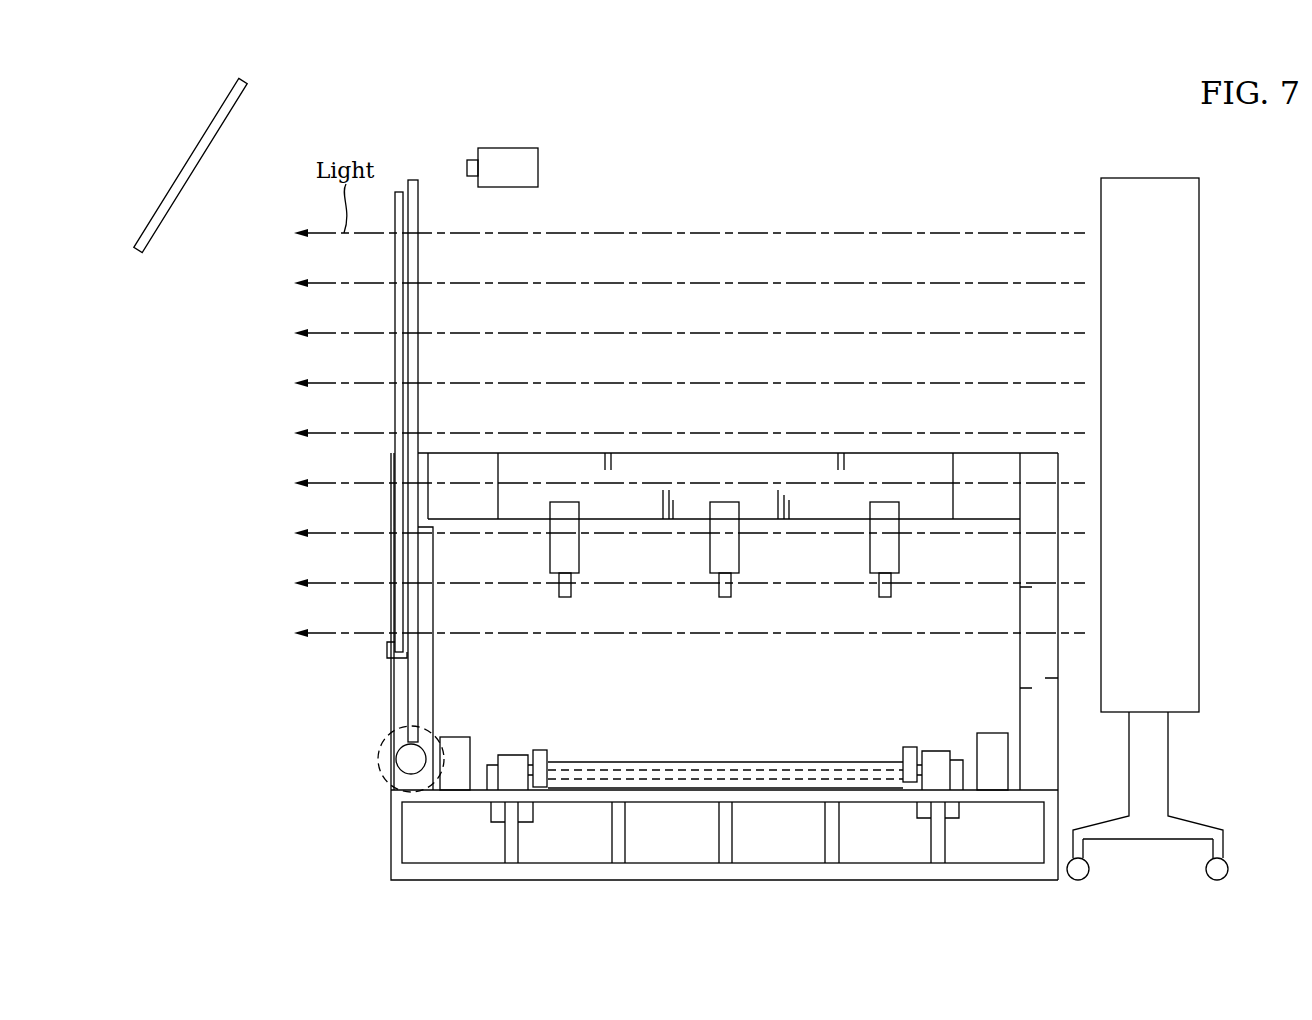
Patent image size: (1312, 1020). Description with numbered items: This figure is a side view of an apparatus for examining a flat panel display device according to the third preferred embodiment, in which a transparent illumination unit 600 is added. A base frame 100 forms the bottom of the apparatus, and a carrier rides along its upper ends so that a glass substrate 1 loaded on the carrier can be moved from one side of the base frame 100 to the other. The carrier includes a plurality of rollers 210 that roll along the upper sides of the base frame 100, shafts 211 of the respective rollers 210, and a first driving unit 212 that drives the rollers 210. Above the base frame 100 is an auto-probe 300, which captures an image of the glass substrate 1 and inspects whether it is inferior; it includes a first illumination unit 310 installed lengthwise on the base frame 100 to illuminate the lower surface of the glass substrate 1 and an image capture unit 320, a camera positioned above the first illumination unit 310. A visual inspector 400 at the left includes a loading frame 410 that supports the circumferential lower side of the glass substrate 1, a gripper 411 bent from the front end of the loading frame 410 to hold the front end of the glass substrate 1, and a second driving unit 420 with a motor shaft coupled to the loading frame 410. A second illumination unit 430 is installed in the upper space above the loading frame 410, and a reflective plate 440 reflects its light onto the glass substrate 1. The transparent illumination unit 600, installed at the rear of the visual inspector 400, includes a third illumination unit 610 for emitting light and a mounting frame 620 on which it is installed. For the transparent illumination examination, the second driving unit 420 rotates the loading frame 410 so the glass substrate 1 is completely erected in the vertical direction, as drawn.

The glass substrate 1 is at (399, 418).
The base frame 100 is at (382, 838).
The rollers 210 is at (540, 750).
The shafts 211 is at (524, 766).
The first driving unit 212 is at (492, 813).
The auto-probe 300 is at (669, 448).
The first illumination unit 310 is at (728, 770).
The image capture unit 320 is at (719, 549).
The visual inspector 400 is at (424, 677).
The loading frame 410 is at (413, 262).
The gripper 411 is at (387, 650).
The second driving unit 420 is at (378, 760).
The second illumination unit 430 is at (512, 154).
The reflective plate 440 is at (210, 130).
The transparent illumination unit 600 is at (1135, 503).
The third illumination unit 610 is at (1148, 186).
The mounting frame 620 is at (1162, 766).